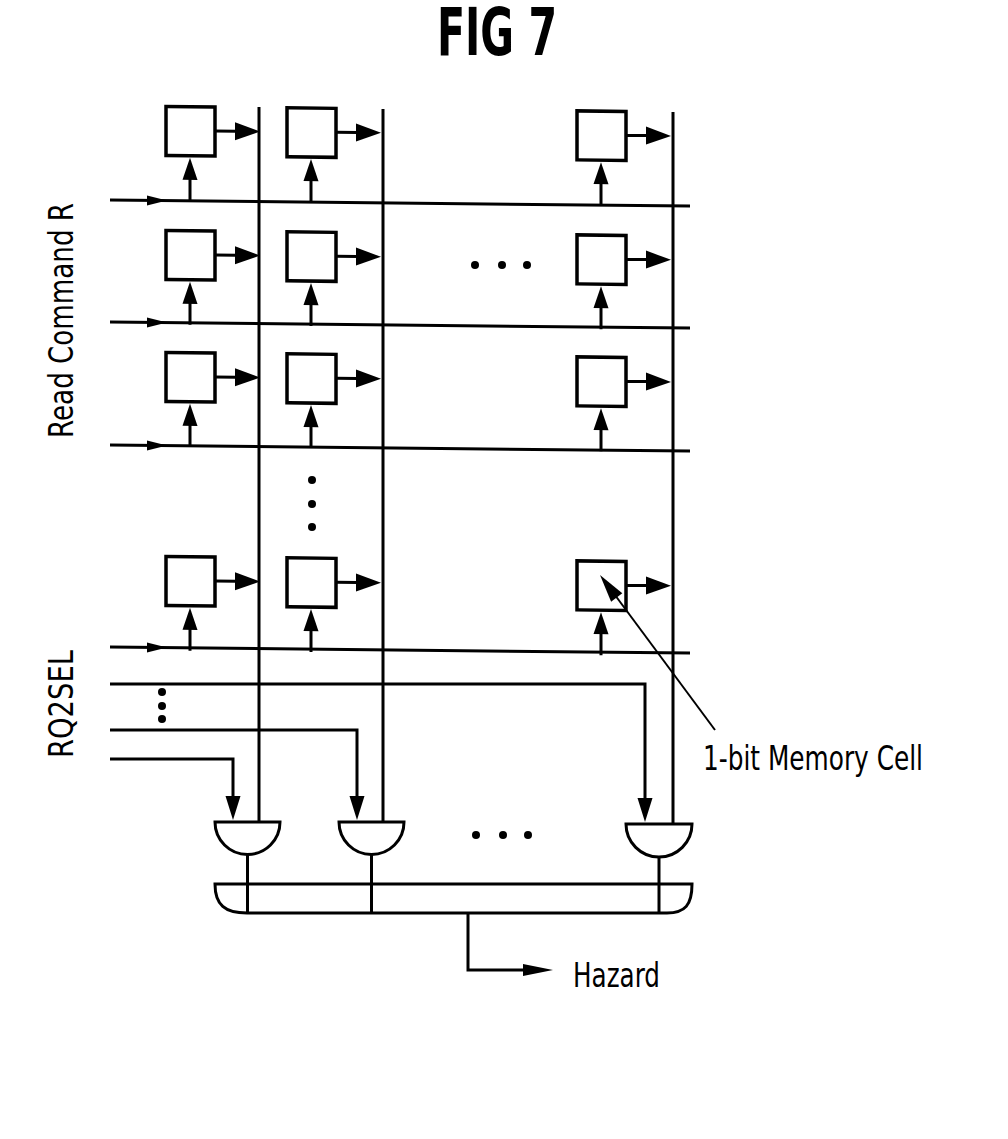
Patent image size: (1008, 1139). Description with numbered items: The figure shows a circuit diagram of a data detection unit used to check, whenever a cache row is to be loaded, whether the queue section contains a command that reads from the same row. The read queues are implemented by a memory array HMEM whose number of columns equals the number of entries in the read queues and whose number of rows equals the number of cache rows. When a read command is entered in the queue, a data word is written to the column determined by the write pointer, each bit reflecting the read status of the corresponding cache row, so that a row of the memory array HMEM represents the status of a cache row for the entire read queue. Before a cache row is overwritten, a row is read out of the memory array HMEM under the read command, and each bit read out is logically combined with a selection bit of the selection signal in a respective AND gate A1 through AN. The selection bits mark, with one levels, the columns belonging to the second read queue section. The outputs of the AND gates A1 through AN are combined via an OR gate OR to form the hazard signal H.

The memory array HMEM is at (598, 498).
The AND gate A1 is at (222, 836).
The AND gate AN is at (675, 837).
The OR gate OR is at (422, 907).
The hazard signal H is at (497, 977).